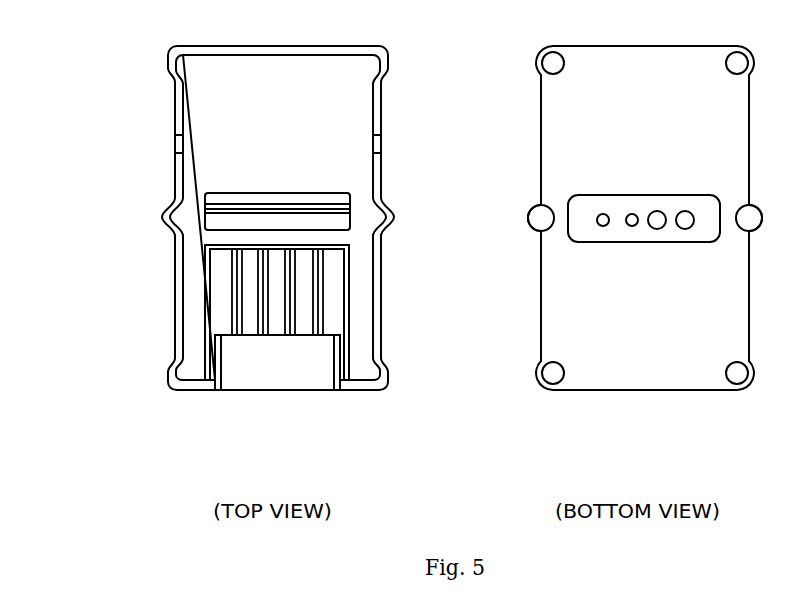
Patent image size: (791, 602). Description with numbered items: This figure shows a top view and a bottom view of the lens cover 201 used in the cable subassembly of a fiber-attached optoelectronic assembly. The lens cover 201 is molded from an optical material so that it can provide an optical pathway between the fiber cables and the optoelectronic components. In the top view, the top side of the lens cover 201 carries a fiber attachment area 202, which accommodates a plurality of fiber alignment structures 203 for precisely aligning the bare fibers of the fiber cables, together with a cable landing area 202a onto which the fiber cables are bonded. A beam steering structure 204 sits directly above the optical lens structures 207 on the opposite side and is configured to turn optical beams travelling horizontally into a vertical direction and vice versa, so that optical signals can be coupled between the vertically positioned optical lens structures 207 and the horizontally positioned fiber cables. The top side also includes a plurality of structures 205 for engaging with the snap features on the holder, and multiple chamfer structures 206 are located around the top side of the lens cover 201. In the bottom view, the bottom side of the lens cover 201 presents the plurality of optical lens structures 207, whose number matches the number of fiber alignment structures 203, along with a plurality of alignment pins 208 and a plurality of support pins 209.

The lens cover 201 is at (230, 241).
The fiber attachment area 202 is at (349, 313).
The cable landing area 202a is at (232, 394).
The fiber alignment structures 203 is at (242, 325).
The beam steering structure 204 is at (233, 193).
The structures for engaging with snap features 205 is at (373, 145).
The chamfer structures 206 is at (175, 277).
The optical lens structures 207 is at (685, 230).
The alignment pins 208 is at (740, 205).
The support pins 209 is at (735, 46).